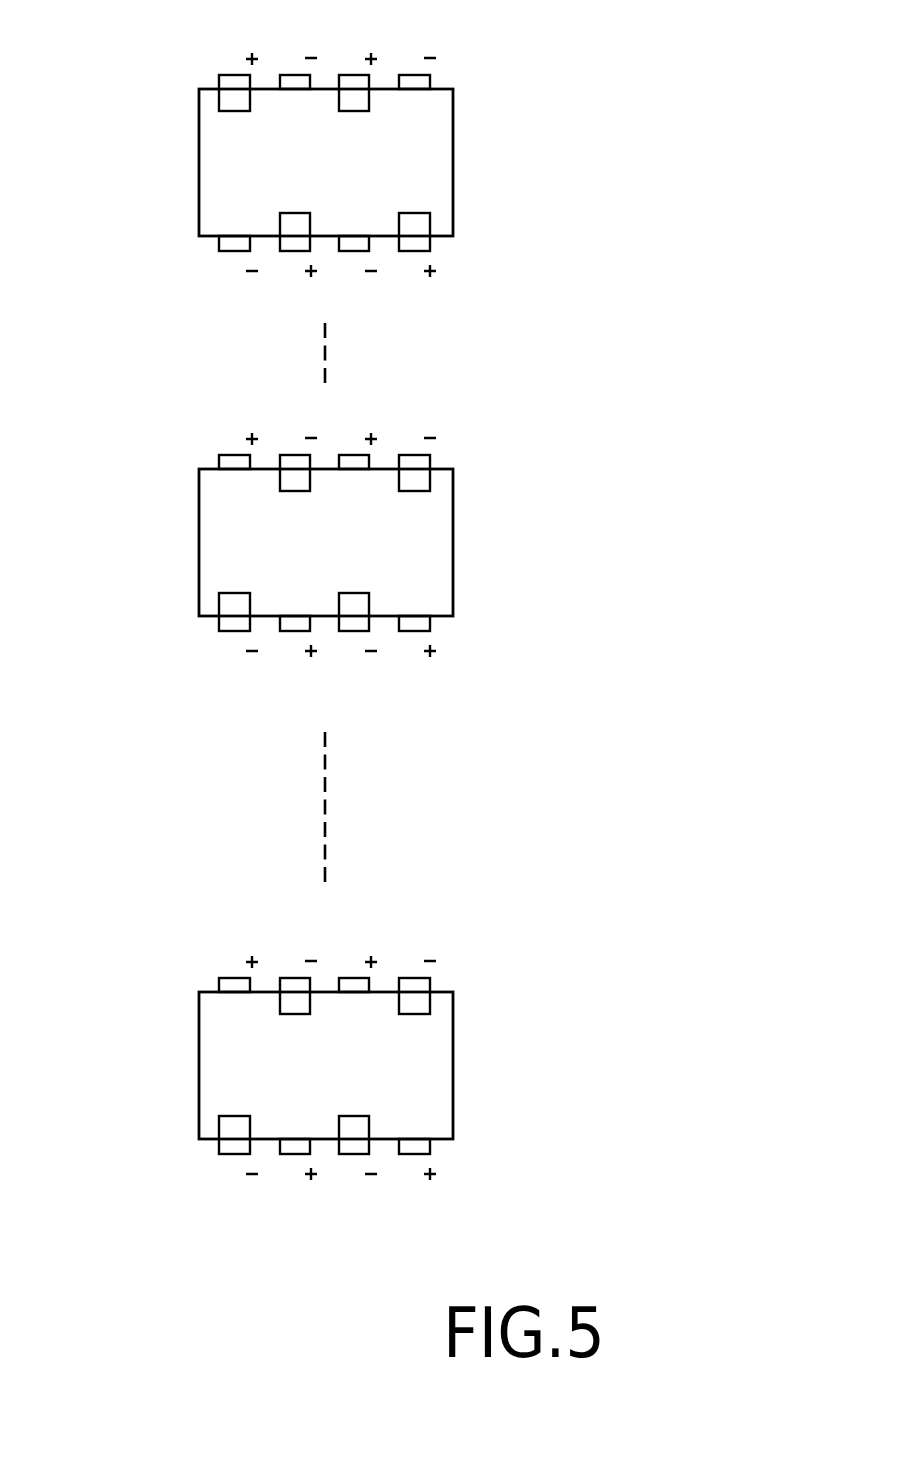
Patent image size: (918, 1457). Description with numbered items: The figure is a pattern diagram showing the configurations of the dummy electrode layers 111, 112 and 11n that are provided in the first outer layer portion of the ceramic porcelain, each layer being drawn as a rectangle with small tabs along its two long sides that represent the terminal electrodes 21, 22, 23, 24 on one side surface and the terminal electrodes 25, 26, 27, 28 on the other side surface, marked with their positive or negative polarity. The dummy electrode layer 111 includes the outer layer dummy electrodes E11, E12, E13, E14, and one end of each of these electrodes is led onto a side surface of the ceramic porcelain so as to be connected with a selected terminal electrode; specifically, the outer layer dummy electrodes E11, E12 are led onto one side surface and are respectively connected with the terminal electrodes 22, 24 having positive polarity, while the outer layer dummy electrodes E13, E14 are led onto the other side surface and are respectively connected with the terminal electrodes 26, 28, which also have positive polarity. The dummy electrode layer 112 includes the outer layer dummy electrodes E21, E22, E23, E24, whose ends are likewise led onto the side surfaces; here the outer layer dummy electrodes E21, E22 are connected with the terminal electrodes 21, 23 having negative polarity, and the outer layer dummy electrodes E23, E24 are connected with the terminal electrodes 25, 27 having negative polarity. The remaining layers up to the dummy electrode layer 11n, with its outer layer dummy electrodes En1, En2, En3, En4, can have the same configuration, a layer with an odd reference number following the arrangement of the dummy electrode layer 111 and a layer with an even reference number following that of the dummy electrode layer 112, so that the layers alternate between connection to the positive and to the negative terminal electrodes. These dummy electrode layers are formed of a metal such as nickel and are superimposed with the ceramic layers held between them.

The dummy electrode layer 111 is at (284, 162).
The dummy electrode layer 112 is at (284, 542).
The dummy electrode layer 11n is at (284, 1065).
The terminal electrode 21 is at (235, 251).
The terminal electrode 22 is at (295, 251).
The terminal electrode 23 is at (354, 251).
The terminal electrode 24 is at (414, 251).
The terminal electrode 25 is at (414, 75).
The terminal electrode 26 is at (354, 75).
The terminal electrode 27 is at (295, 75).
The terminal electrode 28 is at (235, 75).
The outer layer dummy electrode E11 is at (295, 221).
The outer layer dummy electrode E12 is at (415, 222).
The outer layer dummy electrode E13 is at (355, 103).
The outer layer dummy electrode E14 is at (234, 104).
The outer layer dummy electrode E21 is at (177, 598).
The outer layer dummy electrode E22 is at (444, 598).
The outer layer dummy electrode E23 is at (475, 488).
The outer layer dummy electrode E24 is at (206, 488).
The outer layer dummy electrode En1 is at (177, 1121).
The outer layer dummy electrode En2 is at (444, 1121).
The outer layer dummy electrode En3 is at (475, 1011).
The outer layer dummy electrode En4 is at (206, 1011).